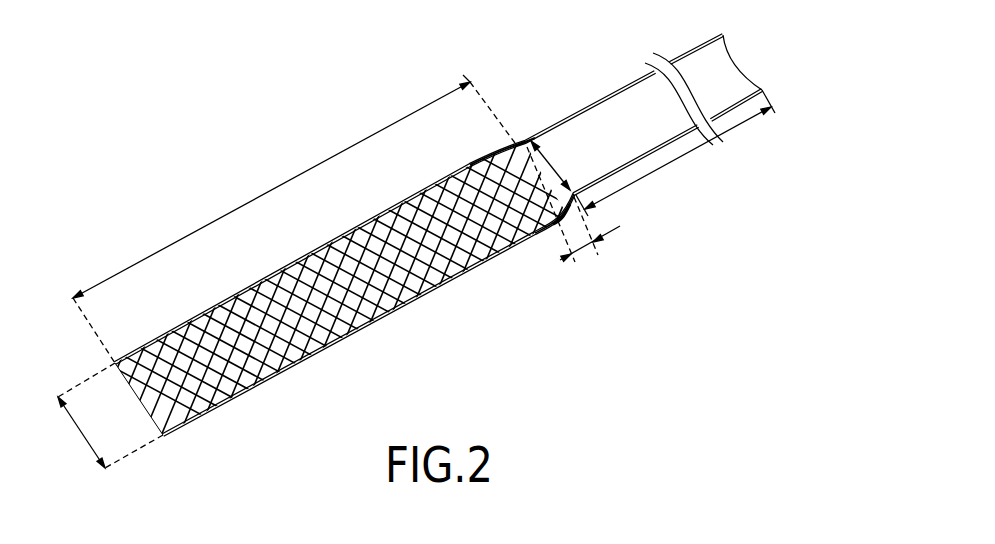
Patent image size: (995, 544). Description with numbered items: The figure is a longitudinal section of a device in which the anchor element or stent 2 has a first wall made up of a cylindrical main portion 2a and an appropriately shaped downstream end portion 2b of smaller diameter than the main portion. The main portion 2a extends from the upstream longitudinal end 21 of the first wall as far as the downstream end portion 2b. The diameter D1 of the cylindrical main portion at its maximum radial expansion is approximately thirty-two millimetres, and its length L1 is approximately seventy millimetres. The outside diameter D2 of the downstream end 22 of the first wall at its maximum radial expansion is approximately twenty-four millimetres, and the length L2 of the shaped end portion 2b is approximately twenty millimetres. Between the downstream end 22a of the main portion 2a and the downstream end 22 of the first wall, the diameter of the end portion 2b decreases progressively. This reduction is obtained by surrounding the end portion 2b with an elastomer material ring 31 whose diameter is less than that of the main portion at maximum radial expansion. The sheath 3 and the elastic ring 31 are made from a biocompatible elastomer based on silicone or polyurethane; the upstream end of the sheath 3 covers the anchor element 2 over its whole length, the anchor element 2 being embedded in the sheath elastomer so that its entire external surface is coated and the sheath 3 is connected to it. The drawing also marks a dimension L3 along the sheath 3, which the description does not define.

The anchor element 2 is at (637, 282).
The main portion 2a is at (355, 338).
The downstream end portion 2b is at (568, 226).
The upstream longitudinal end 21 is at (140, 408).
The downstream end 22 is at (530, 144).
The downstream end of the main portion 22a is at (565, 215).
The sheath 3 is at (270, 373).
The elastomer material ring 31 is at (513, 143).
The length of the cylindrical main portion L1 is at (294, 219).
The length of the end portion L2 is at (604, 233).
The length of cover tube L3 is at (667, 164).
The diameter of the cylindrical main portion D1 is at (108, 415).
The outside diameter of the downstream end D2 is at (553, 165).